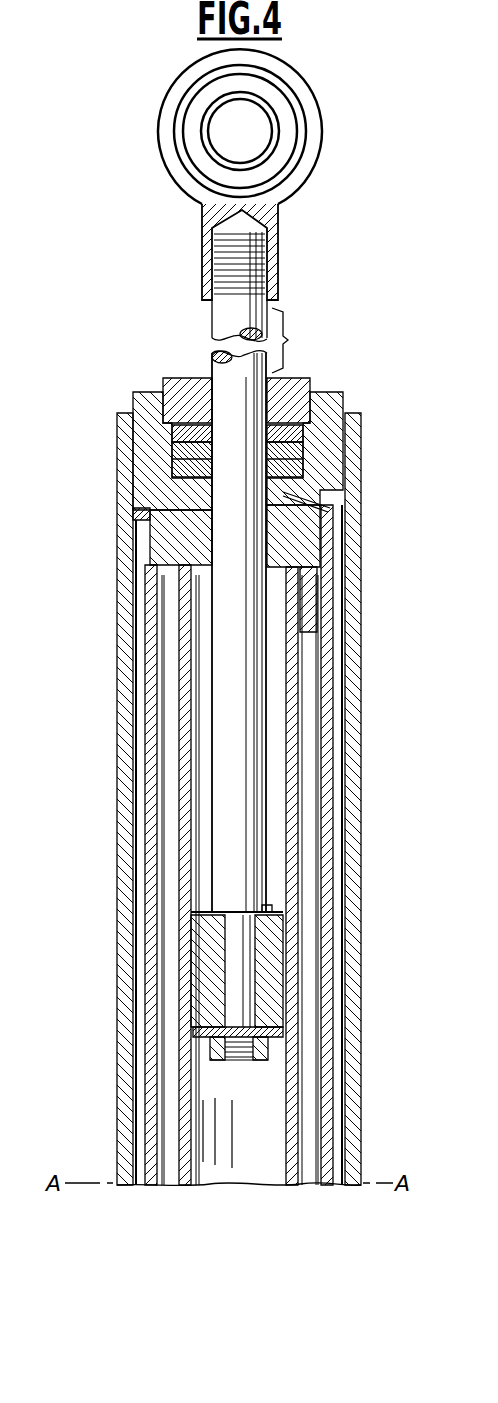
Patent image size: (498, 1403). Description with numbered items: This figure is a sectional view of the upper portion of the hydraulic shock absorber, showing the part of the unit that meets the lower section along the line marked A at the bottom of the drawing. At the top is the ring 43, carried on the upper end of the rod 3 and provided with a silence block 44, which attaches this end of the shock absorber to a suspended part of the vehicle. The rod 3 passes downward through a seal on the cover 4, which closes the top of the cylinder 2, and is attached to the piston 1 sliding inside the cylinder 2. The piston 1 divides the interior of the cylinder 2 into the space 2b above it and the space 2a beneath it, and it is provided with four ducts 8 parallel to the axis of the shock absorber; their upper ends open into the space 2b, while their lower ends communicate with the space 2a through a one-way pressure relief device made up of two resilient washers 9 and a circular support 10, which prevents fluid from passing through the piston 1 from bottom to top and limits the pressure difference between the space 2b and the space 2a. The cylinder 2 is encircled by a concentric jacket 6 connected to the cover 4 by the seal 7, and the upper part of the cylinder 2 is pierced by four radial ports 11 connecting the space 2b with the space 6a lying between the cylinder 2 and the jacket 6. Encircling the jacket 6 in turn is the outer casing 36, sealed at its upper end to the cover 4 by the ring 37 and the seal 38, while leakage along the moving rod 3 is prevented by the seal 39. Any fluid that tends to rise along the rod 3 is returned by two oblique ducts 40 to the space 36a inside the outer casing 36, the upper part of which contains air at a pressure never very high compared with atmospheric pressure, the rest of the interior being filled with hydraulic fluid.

The piston 1 is at (210, 912).
The cylinder 2 is at (288, 818).
The space beneath the piston 2a is at (214, 1186).
The space above the piston 2b is at (272, 685).
The rod 3 is at (244, 725).
The cover 4 is at (337, 537).
The jacket 6 is at (333, 605).
The space between the cylinder and the jacket 6a is at (175, 672).
The seal 7 is at (135, 513).
The ducts 8 is at (267, 908).
The resilient washers 9 is at (202, 1048).
The circular support 10 is at (270, 1056).
The radial ports 11 is at (288, 608).
The outer casing 36 is at (350, 1142).
The space 36a is at (138, 785).
The ring 37 is at (150, 392).
The seal 38 is at (327, 480).
The seal 39 is at (303, 433).
The oblique ducts 40 is at (345, 498).
The ring 43 is at (276, 72).
The silence block 44 is at (267, 97).